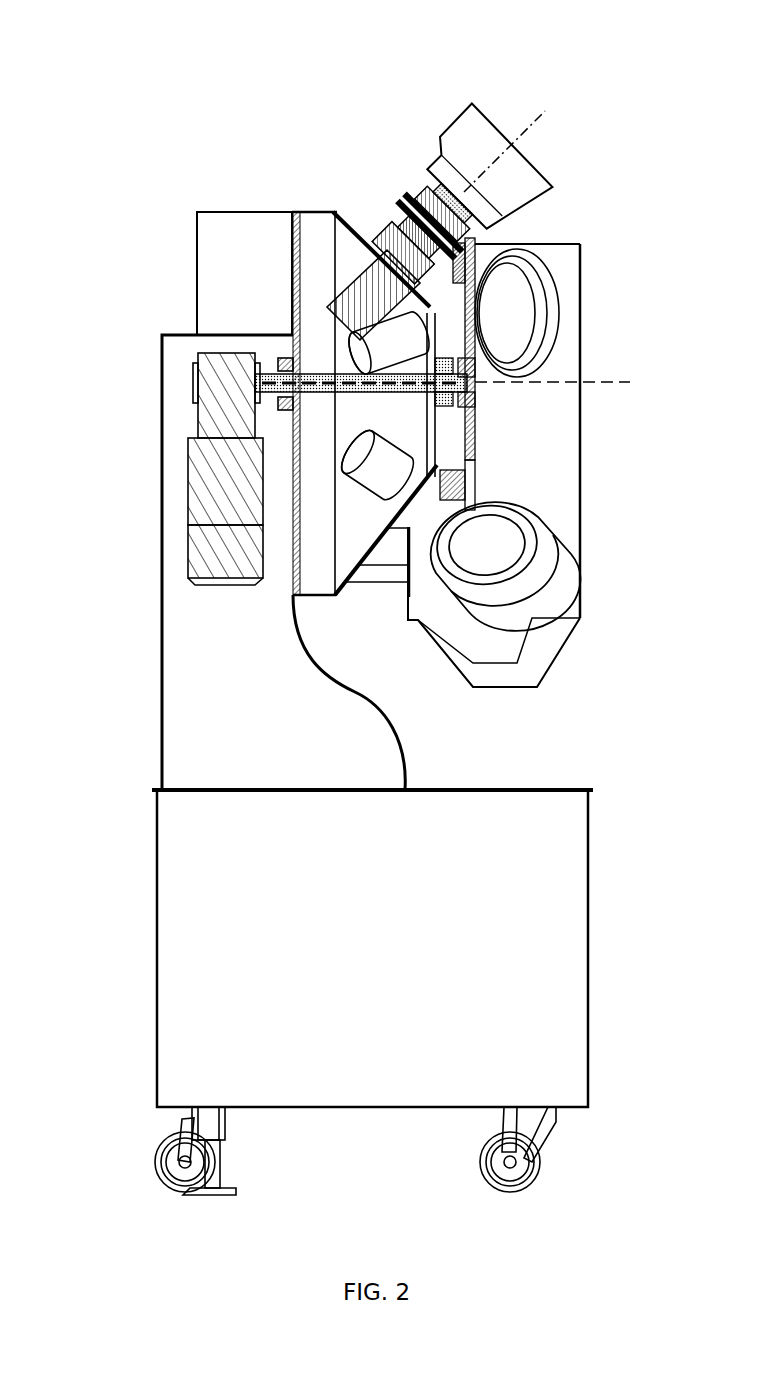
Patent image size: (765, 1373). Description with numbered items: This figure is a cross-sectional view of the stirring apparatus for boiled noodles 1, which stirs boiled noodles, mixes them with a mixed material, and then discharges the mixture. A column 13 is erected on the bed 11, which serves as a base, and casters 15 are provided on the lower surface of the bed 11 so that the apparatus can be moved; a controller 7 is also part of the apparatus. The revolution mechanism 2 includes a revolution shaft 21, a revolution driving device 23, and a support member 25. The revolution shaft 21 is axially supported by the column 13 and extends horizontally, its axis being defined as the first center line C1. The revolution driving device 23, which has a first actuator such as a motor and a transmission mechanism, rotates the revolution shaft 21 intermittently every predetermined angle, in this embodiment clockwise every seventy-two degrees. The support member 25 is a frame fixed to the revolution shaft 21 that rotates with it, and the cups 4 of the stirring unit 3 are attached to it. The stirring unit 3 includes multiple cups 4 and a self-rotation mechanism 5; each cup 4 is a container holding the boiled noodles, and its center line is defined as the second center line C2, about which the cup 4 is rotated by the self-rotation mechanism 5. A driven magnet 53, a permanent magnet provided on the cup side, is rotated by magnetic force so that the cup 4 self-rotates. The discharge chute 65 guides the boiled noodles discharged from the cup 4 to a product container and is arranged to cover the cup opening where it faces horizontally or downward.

The stirring apparatus for boiled noodles 1 is at (137, 72).
The revolution mechanism 2 is at (499, 411).
The stirring unit 3 is at (403, 195).
The cup 4 is at (443, 118).
The self-rotation mechanism 5 is at (425, 216).
The controller 7 is at (215, 262).
The bed 11 is at (575, 822).
The column 13 is at (177, 668).
The caster 15 is at (541, 1160).
The revolution shaft 21 is at (387, 393).
The revolution driving device 23 is at (238, 588).
The support member 25 is at (478, 440).
The driven magnet 53 is at (317, 597).
The discharge chute 65 is at (580, 503).
The first center line C1 is at (613, 382).
The second center line C2 is at (533, 122).